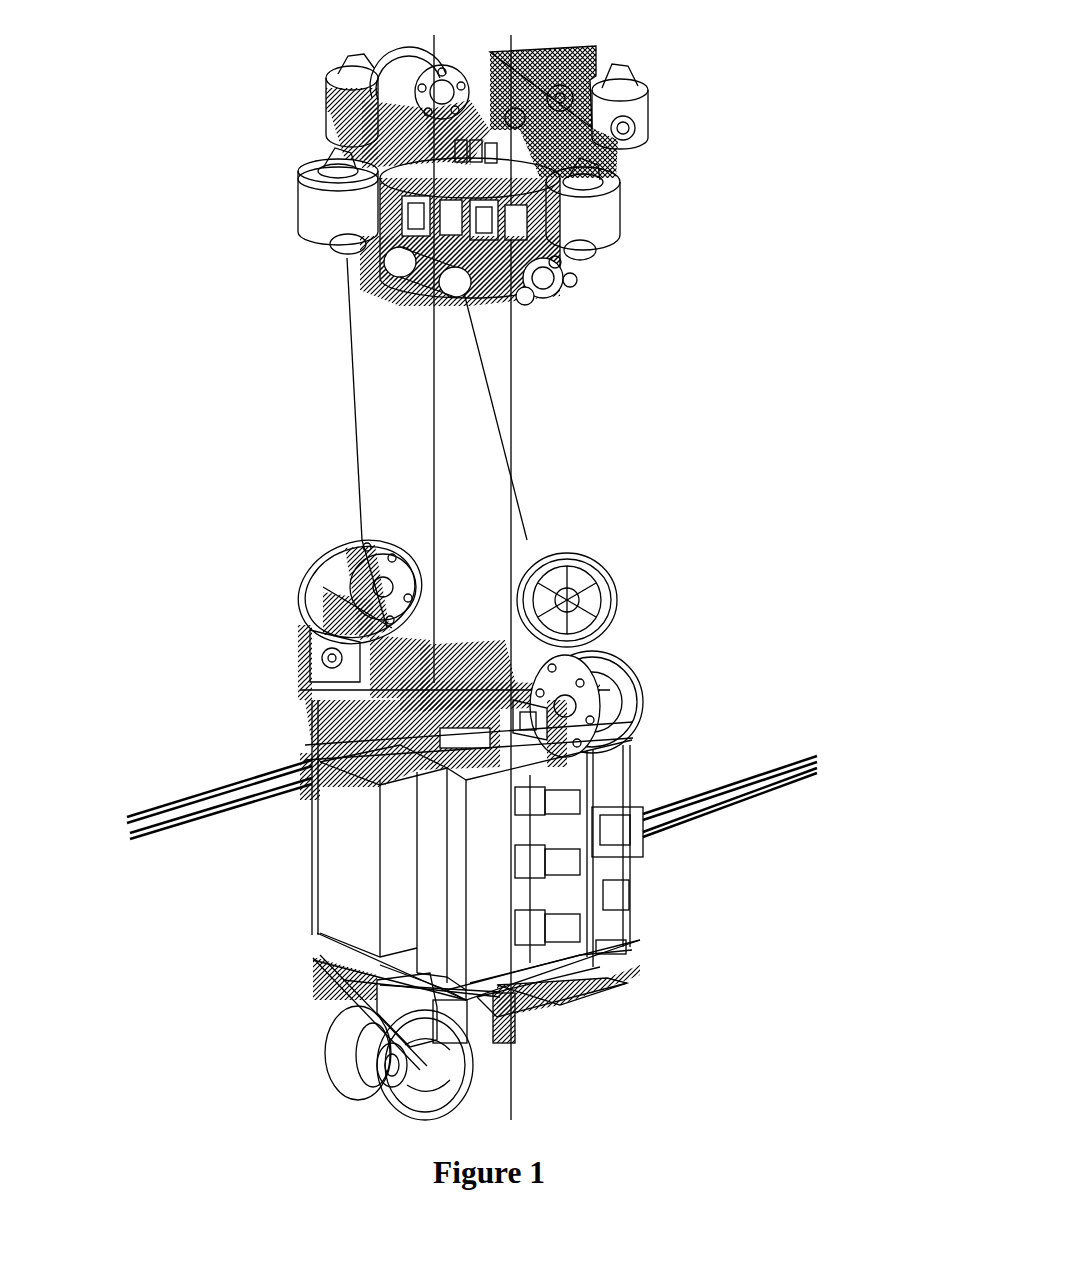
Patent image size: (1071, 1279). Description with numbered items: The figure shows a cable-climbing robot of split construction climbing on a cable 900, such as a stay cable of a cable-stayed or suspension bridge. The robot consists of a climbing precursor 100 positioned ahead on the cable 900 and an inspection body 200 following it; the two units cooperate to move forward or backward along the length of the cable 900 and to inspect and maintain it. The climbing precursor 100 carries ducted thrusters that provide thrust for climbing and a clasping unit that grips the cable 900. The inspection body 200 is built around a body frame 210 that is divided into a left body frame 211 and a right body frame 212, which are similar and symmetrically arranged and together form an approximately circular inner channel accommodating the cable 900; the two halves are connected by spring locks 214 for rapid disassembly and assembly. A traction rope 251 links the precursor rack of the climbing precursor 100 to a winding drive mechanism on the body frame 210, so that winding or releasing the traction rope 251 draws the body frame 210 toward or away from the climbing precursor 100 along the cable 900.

The climbing precursor 100 is at (655, 228).
The inspection body 200 is at (647, 647).
The cable 900 is at (503, 350).
The traction rope 251 is at (503, 433).
The body frame 210 is at (717, 987).
The left body frame 211 is at (570, 960).
The right body frame 212 is at (550, 997).
The spring locks 214 is at (580, 867).